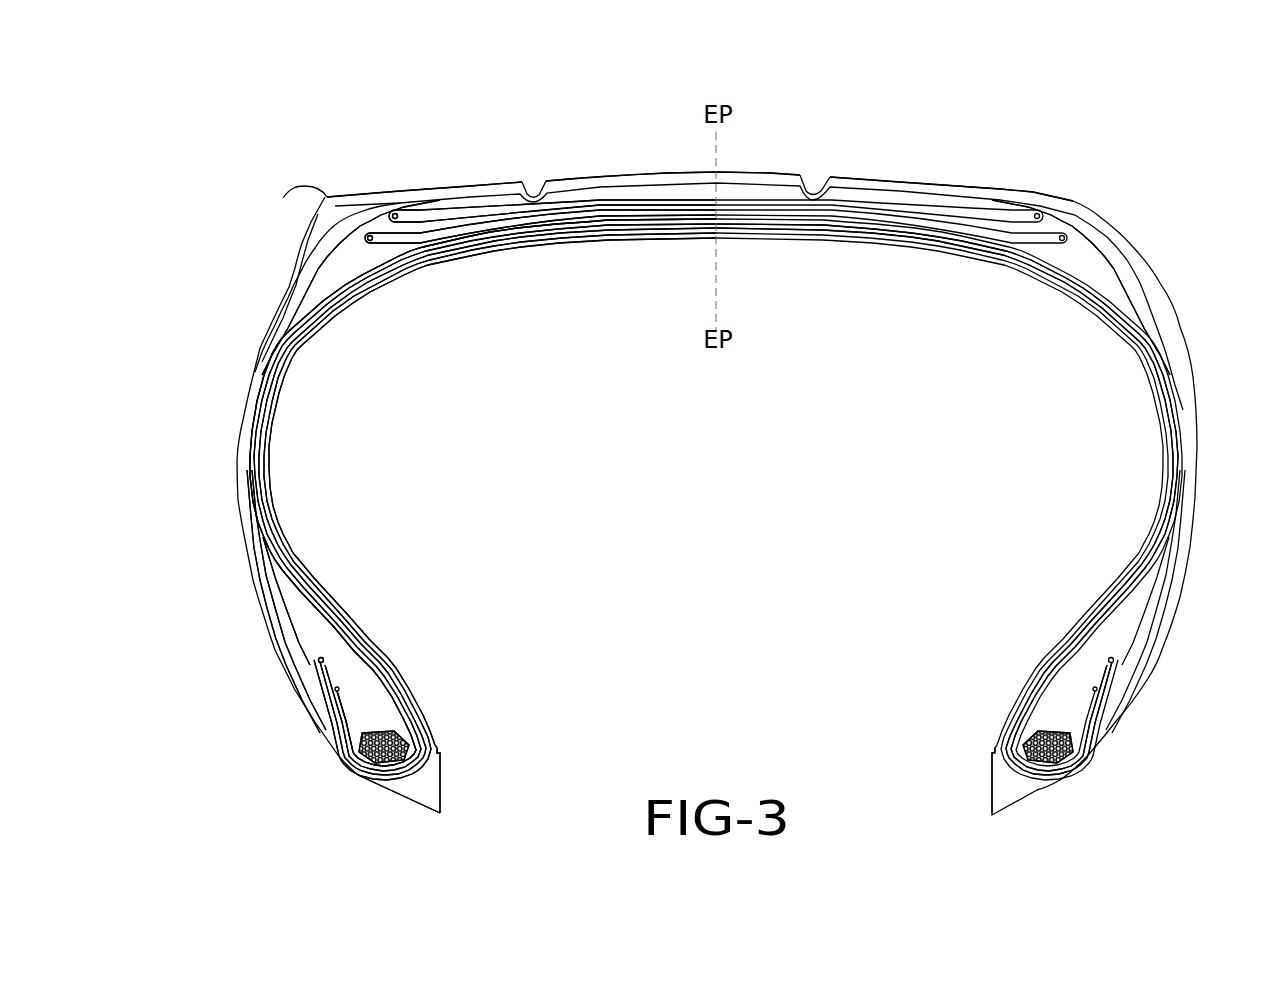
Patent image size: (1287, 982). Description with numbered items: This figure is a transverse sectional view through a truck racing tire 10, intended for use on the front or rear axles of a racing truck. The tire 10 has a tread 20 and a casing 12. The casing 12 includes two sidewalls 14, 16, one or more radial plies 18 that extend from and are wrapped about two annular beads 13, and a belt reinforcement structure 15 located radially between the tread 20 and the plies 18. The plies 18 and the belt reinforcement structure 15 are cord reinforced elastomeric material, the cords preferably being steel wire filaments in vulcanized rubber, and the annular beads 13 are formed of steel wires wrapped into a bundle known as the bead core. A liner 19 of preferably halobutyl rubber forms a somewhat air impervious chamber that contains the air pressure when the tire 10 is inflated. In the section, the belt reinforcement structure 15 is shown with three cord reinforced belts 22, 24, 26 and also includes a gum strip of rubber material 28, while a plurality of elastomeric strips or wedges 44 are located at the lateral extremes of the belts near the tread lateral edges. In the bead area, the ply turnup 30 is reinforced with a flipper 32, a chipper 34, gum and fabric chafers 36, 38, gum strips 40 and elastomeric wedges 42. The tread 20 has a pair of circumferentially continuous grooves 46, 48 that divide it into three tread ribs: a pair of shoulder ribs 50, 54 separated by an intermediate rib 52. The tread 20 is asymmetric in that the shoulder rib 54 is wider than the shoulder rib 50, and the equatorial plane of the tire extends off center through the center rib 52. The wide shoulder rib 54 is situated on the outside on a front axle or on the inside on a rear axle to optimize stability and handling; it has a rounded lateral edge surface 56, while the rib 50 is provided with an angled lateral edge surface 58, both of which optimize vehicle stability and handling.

The truck racing tire 10 is at (250, 140).
The casing 12 is at (1210, 360).
The annular beads 13 is at (385, 748).
The sidewall 14 is at (243, 533).
The belt reinforcement structure 15 is at (815, 235).
The sidewall 16 is at (1183, 541).
The radial plies 18 is at (252, 437).
The liner 19 is at (1162, 507).
The tread 20 is at (660, 168).
The cord reinforced belt 22 is at (470, 228).
The cord reinforced belt 24 is at (540, 215).
The cord reinforced belt 26 is at (622, 207).
The gum strip of rubber material 28 is at (312, 660).
The ply turnup 30 is at (337, 718).
The flipper 32 is at (405, 728).
The chipper 34 is at (400, 700).
The gum chafer 36 is at (357, 772).
The fabric chafer 38 is at (335, 798).
The gum strips 40 is at (317, 623).
The elastomeric wedges 42 is at (283, 610).
The elastomeric strips or wedges 44 is at (312, 288).
The circumferentially continuous groove 46 is at (533, 195).
The circumferentially continuous groove 48 is at (813, 197).
The shoulder rib 50 is at (398, 183).
The intermediate rib 52 is at (613, 170).
The shoulder rib 54 is at (902, 175).
The rounded lateral edge surface 56 is at (1088, 211).
The angled lateral edge surface 58 is at (283, 198).